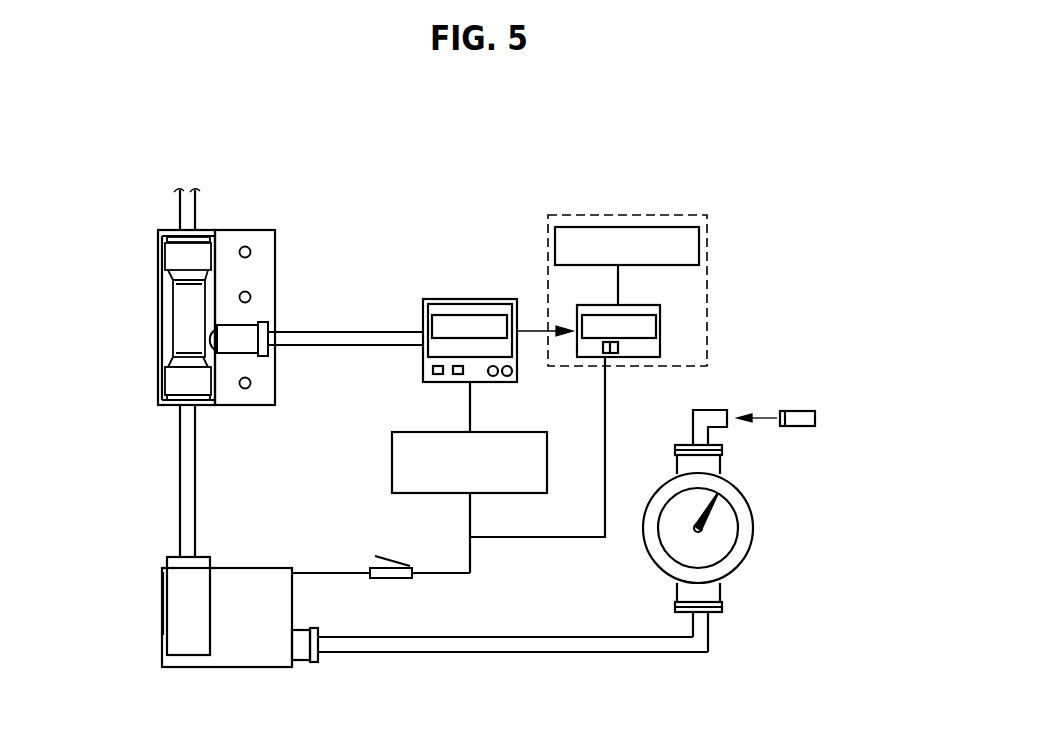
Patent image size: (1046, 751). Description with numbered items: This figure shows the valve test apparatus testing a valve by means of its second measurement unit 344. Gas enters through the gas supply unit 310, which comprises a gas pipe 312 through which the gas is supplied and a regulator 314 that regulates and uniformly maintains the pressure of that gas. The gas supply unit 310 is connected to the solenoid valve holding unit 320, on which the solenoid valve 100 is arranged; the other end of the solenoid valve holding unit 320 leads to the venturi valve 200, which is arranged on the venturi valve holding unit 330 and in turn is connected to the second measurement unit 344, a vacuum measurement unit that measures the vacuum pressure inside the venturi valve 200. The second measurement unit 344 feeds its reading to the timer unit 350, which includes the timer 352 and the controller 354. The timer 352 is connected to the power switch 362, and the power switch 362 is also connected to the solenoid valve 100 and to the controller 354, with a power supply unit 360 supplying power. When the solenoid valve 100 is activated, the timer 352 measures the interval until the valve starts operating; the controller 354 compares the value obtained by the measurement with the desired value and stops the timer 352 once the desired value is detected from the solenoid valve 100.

The solenoid valve 100 is at (167, 598).
The venturi valve 200 is at (247, 335).
The gas supply unit 310 is at (763, 531).
The gas pipe 312 is at (800, 426).
The regulator 314 is at (735, 490).
The solenoid valve holding unit 320 is at (248, 667).
The venturi valve holding unit 330 is at (158, 313).
The second measurement unit 344 is at (497, 299).
The timer unit 350 is at (670, 254).
The timer 352 is at (660, 328).
The controller 354 is at (699, 248).
The power supply unit 360 is at (392, 458).
The power switch 362 is at (390, 578).